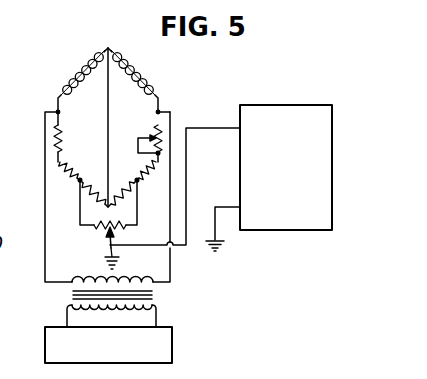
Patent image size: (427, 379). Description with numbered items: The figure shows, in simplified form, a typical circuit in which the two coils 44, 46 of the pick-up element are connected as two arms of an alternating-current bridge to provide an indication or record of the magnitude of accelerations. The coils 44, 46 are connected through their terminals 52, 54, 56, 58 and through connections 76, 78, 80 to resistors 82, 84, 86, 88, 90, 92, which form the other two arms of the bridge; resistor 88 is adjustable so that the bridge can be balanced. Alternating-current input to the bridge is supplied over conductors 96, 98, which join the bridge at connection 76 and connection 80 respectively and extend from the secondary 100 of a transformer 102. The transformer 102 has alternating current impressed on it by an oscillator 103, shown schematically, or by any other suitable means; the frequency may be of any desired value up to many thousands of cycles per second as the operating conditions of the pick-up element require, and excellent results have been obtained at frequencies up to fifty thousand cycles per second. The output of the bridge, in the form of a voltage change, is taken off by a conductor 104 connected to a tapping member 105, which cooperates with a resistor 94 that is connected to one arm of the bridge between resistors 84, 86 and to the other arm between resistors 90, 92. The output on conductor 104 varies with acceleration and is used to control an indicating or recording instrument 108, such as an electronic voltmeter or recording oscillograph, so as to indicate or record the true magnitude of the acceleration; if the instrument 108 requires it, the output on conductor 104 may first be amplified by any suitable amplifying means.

The coil 44 is at (78, 70).
The coil 46 is at (140, 68).
The terminal 52 is at (106, 48).
The terminal 54 is at (56, 97).
The terminal 56 is at (110, 48).
The terminal 58 is at (163, 90).
The connection 76 is at (59, 118).
The connection 78 is at (110, 103).
The connection 80 is at (161, 112).
The resistor 82 is at (66, 131).
The resistor 84 is at (63, 185).
The resistor 86 is at (102, 150).
The adjustable resistor 88 is at (153, 128).
The resistor 90 is at (153, 183).
The resistor 92 is at (124, 180).
The resistor 94 is at (92, 229).
The conductor 96 is at (45, 213).
The conductor 98 is at (160, 228).
The secondary 100 is at (126, 277).
The transformer 102 is at (163, 293).
The oscillator 103 is at (173, 336).
The conductor 104 is at (188, 128).
The tapping member 105 is at (107, 248).
The indicating or recording instrument 108 is at (296, 105).